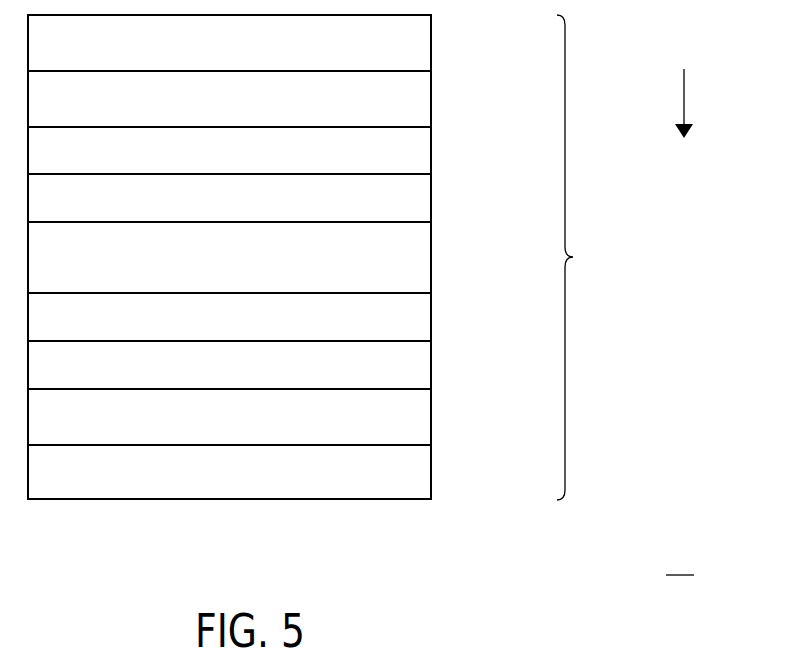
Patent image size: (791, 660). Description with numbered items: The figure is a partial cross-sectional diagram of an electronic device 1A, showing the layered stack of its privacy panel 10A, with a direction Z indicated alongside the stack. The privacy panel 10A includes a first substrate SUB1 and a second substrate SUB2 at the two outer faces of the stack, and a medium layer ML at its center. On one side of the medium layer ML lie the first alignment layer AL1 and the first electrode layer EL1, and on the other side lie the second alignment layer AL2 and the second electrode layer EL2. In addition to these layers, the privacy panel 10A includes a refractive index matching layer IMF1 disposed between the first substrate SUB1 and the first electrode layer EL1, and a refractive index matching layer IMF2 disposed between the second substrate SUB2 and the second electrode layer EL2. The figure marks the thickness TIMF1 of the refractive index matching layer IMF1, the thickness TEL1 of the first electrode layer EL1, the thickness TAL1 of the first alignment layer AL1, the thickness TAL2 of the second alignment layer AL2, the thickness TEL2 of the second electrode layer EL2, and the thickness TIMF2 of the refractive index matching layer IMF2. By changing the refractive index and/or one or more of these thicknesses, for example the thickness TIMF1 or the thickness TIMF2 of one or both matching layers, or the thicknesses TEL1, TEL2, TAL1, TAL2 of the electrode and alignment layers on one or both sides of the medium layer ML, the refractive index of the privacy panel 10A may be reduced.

The second substrate SUB2 is at (408, 47).
The refractive index matching layer IMF2 is at (408, 100).
The second electrode layer EL2 is at (408, 148).
The second alignment layer AL2 is at (408, 196).
The medium layer ML is at (408, 262).
The first alignment layer AL1 is at (408, 315).
The first electrode layer EL1 is at (408, 364).
The refractive index matching layer IMF1 is at (408, 419).
The first substrate SUB1 is at (408, 474).
The thickness of refractive index matching layer IMF2 TIMF2 is at (59, 72).
The thickness of second electrode layer TEL2 is at (59, 128).
The thickness of second alignment layer TAL2 is at (59, 175).
The thickness of first alignment layer TAL1 is at (59, 294).
The thickness of first electrode layer TEL1 is at (59, 342).
The thickness of refractive index matching layer IMF1 TIMF1 is at (59, 390).
The privacy panel 10A is at (590, 257).
The Z direction Z is at (686, 81).
The electronic device 1A is at (681, 562).